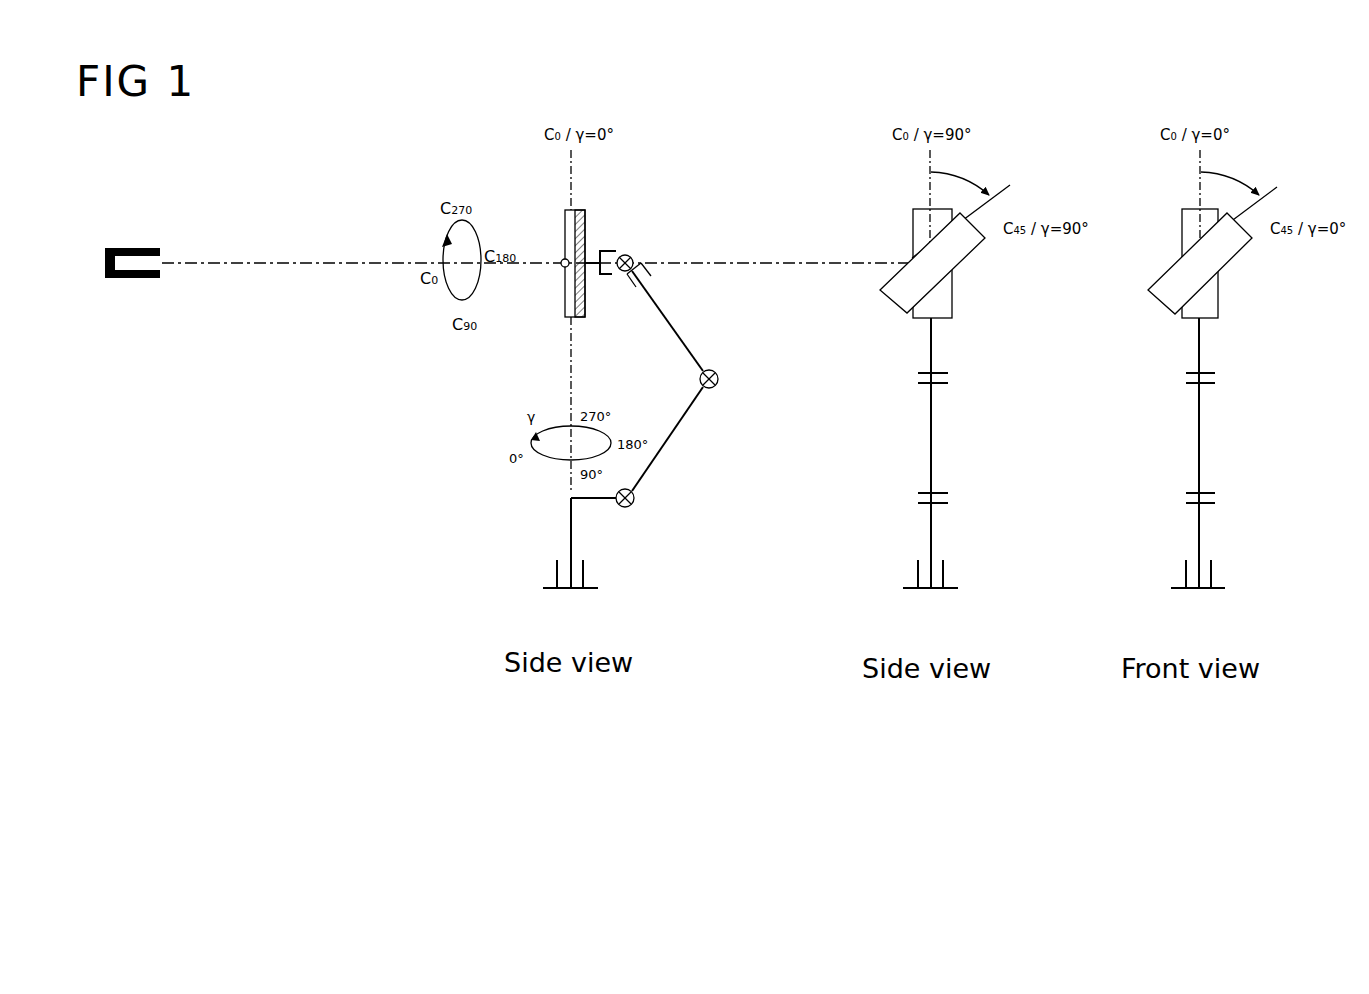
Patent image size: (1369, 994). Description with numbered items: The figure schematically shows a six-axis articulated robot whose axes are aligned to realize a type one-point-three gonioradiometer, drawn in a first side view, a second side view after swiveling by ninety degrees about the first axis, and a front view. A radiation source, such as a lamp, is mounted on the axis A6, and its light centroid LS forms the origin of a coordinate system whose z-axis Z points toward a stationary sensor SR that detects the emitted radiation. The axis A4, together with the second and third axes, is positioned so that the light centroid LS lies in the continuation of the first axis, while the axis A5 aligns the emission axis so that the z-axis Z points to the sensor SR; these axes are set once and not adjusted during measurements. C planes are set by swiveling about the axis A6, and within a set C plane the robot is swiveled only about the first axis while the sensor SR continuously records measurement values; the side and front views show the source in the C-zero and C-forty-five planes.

The sensor SR is at (126, 279).
The z-axis Z is at (546, 248).
The light centroid LS is at (555, 252).
The axis A4 is at (665, 317).
The axis A5 is at (638, 249).
The axis A6 is at (603, 247).